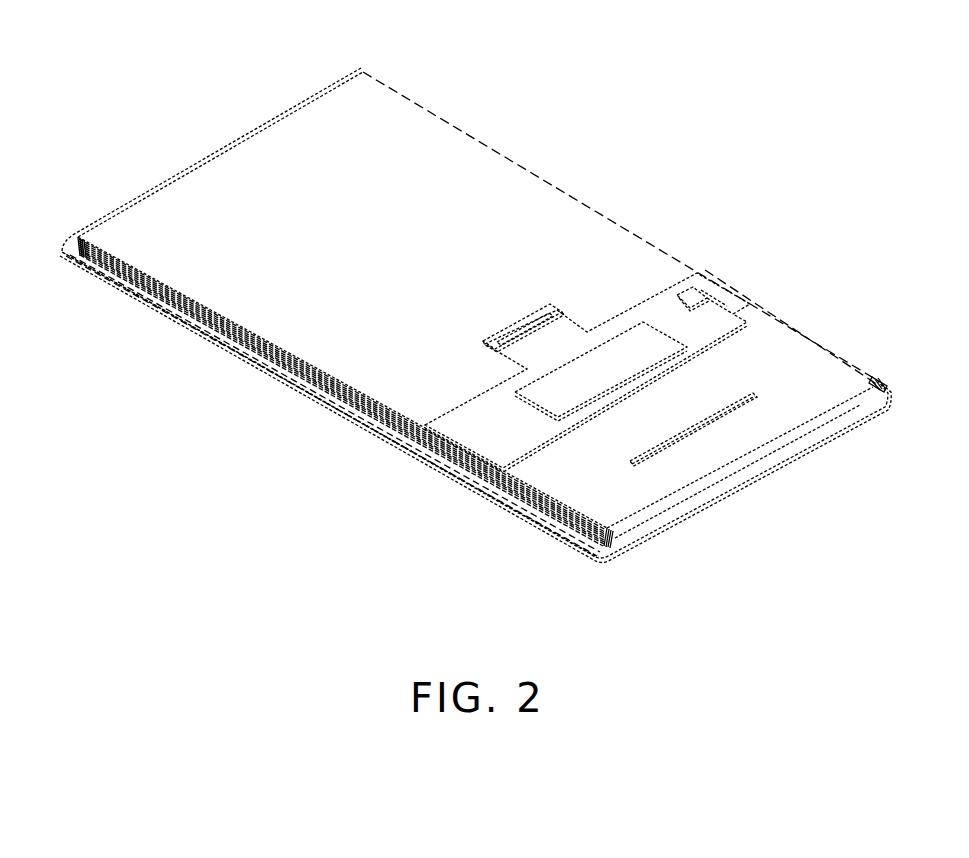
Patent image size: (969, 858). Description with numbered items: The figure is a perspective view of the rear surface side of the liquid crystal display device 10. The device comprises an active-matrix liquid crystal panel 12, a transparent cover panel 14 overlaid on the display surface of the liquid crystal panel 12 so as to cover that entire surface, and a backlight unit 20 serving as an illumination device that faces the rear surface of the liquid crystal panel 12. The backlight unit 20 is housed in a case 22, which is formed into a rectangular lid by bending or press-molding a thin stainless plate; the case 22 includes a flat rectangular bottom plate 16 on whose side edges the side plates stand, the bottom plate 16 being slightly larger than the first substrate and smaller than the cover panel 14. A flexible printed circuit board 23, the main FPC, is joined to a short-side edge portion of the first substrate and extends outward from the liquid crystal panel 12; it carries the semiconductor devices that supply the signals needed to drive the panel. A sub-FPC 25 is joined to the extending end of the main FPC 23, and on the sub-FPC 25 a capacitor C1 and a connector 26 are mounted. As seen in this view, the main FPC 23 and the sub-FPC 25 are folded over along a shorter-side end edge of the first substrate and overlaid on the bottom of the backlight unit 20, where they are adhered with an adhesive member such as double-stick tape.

The liquid crystal display device 10 is at (475, 309).
The liquid crystal panel 12 is at (222, 347).
The transparent cover panel 14 is at (287, 383).
The bottom plate 16 is at (374, 127).
The backlight unit 20 is at (418, 133).
The case 22 is at (290, 143).
The flexible printed circuit board 23 is at (637, 505).
The sub-FPC 25 is at (470, 433).
The connector 26 is at (527, 327).
The capacitor C1 is at (612, 352).